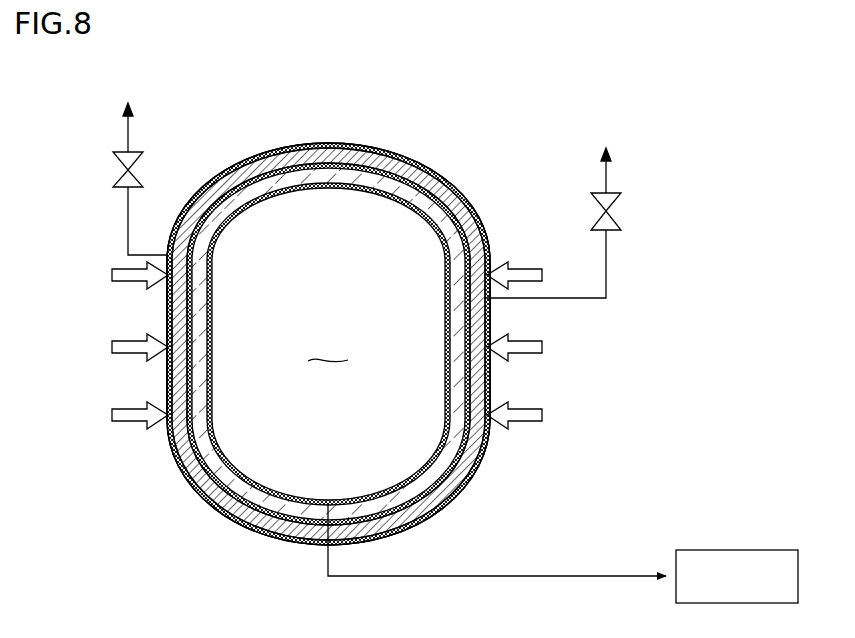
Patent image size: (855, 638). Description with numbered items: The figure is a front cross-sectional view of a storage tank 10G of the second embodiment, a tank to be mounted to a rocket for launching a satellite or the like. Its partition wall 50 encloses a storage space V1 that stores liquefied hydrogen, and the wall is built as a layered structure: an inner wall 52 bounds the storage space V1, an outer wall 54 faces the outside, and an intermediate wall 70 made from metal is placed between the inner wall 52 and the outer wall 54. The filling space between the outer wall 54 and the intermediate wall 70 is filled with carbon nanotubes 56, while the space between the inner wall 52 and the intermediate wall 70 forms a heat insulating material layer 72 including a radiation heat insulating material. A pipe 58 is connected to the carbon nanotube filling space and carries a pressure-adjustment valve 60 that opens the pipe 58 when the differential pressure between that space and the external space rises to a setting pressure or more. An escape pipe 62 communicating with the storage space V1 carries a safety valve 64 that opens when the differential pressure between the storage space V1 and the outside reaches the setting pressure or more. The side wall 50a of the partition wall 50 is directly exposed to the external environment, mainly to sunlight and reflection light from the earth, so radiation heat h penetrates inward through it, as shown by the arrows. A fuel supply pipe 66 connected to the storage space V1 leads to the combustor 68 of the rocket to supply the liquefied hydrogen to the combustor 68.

The storage tank 10G is at (402, 106).
The partition wall 50 is at (251, 150).
The side wall 50a is at (164, 318).
The inner wall 52 is at (324, 187).
The outer wall 54 is at (332, 144).
The carbon nanotubes 56 is at (462, 187).
The pipe 58 is at (610, 245).
The pressure-adjustment valve 60 is at (616, 215).
The escape pipe 62 is at (128, 230).
The safety valve 64 is at (114, 173).
The fuel supply pipe 66 is at (552, 575).
The combustor 68 is at (733, 549).
The intermediate wall 70 is at (426, 177).
The heat insulating material layer 72 is at (380, 183).
The storage space V1 is at (250, 452).
The radiation heat h is at (520, 330).